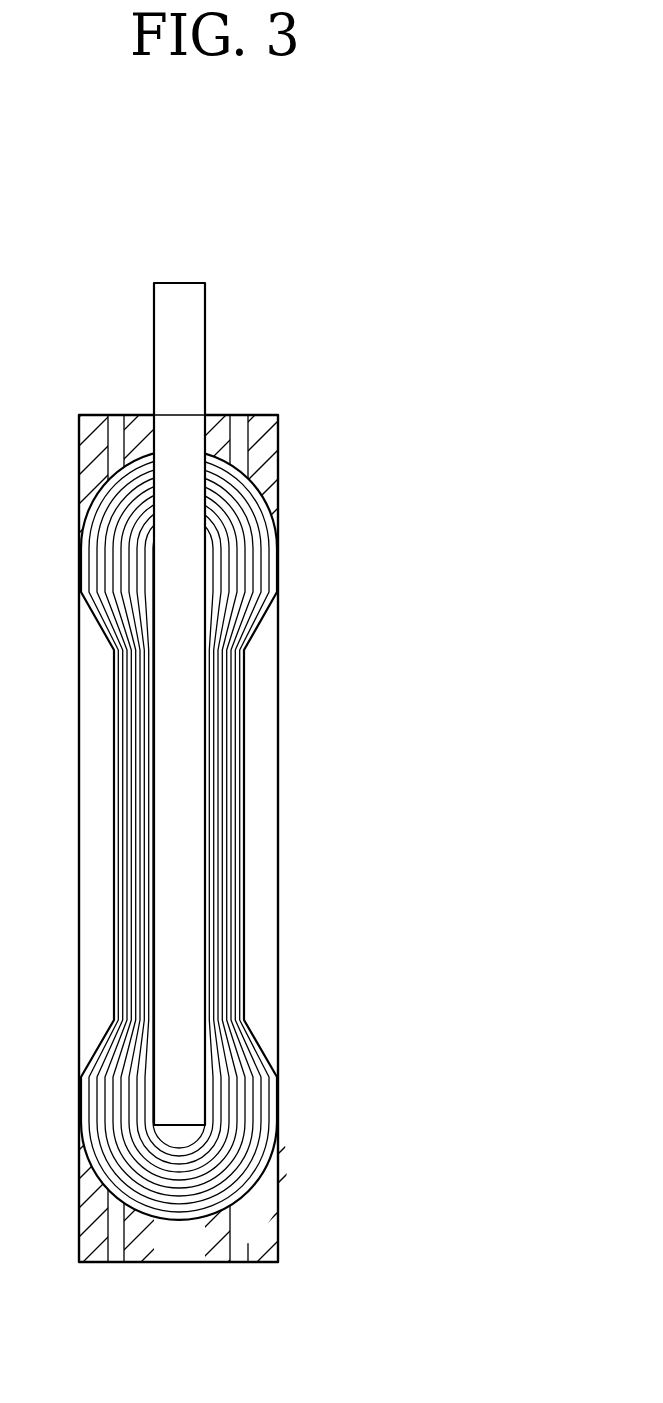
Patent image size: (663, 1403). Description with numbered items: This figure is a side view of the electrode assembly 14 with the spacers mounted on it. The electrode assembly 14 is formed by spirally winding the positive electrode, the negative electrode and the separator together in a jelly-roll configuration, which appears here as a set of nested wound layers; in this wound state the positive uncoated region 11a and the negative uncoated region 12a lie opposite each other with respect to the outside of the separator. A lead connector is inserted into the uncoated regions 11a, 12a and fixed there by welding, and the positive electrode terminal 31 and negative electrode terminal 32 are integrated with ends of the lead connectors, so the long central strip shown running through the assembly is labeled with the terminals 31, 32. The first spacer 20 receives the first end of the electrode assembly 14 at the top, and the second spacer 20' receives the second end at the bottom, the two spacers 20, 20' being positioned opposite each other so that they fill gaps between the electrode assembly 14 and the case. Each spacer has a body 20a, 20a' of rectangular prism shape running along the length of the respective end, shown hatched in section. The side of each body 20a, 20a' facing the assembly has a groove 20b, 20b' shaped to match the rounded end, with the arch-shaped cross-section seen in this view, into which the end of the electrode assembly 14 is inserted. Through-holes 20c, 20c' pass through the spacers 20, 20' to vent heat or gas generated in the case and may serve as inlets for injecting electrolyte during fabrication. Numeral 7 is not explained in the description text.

The electrode assembly 7 is at (304, 835).
The positive uncoated region 11a is at (304, 835).
The negative uncoated region 12a is at (237, 668).
The electrode assembly 14 is at (282, 875).
The first spacer 20 is at (230, 444).
The body 20a is at (230, 444).
The groove 20b is at (230, 444).
The through-holes 20c is at (230, 444).
The second spacer 20' is at (225, 1219).
The body 20a' is at (225, 1219).
The groove 20b' is at (225, 1219).
The through-holes 20c' is at (225, 1219).
The positive electrode terminal 31 is at (290, 693).
The negative electrode terminal 32 is at (193, 332).